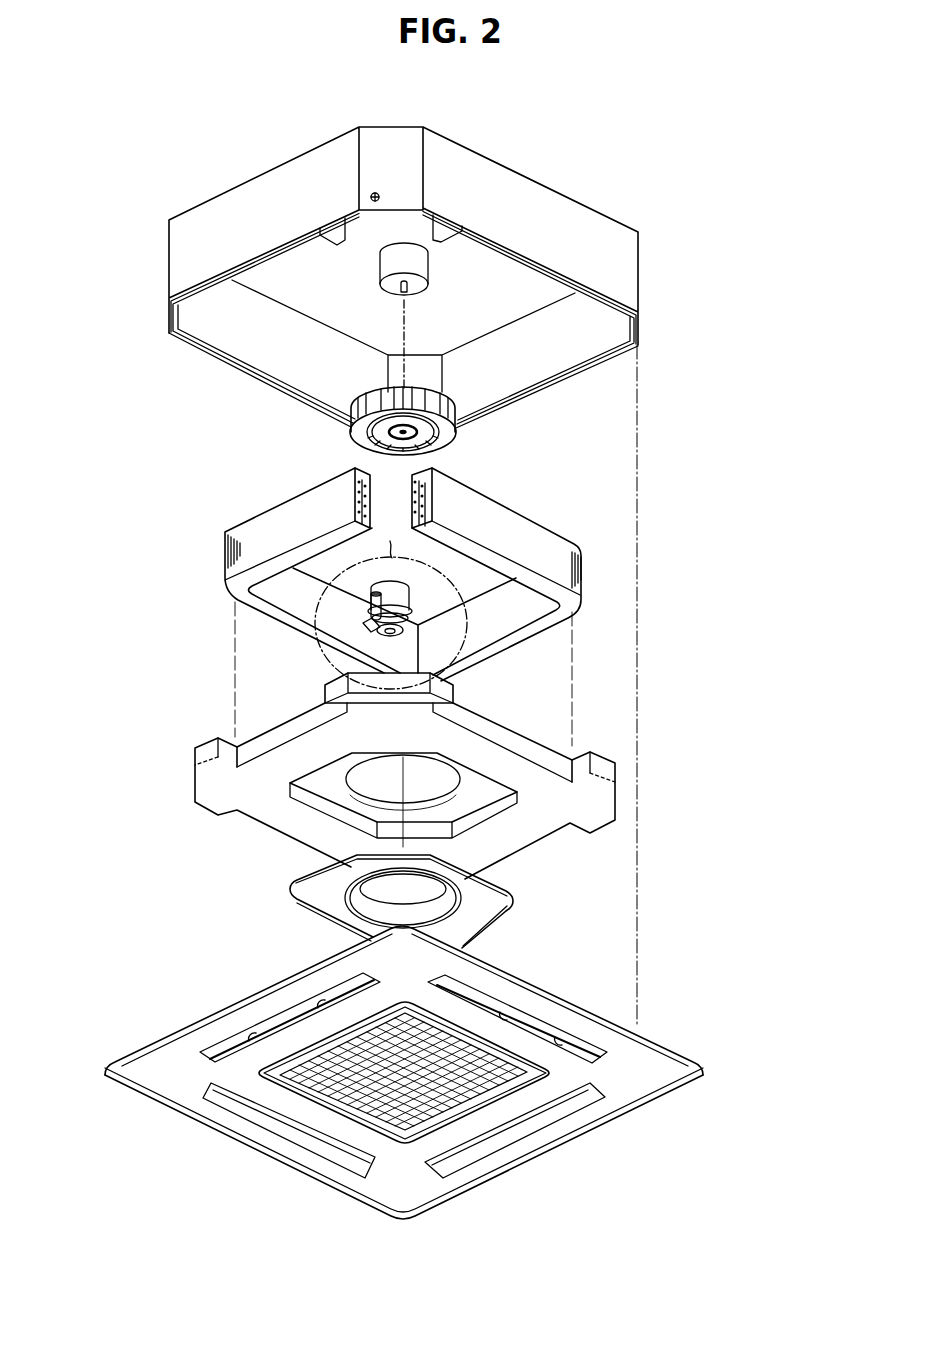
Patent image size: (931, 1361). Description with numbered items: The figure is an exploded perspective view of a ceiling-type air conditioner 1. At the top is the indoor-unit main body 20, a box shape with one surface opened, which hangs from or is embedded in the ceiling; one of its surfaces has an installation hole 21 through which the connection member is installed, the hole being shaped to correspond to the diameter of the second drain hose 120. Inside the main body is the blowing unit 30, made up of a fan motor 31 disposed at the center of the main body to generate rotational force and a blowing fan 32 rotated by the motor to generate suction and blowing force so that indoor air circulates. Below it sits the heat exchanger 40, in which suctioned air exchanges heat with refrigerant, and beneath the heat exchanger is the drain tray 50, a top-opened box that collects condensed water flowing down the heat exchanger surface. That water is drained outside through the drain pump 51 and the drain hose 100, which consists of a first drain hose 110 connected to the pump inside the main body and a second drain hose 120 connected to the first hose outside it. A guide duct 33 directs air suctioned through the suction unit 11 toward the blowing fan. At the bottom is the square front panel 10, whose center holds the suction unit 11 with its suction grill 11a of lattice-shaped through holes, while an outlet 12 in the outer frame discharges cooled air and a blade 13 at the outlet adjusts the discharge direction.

The ceiling-type air conditioner 1 is at (691, 148).
The front panel 10 is at (709, 1032).
The suction unit 11 is at (458, 1127).
The suction grill 11a is at (393, 1088).
The outlet 12 is at (523, 1010).
The blade 13 is at (547, 1120).
The indoor-unit main body 20 is at (516, 191).
The installation hole 21 is at (371, 197).
The blowing unit 30 is at (425, 425).
The fan motor 31 is at (415, 263).
The blowing fan 32 is at (352, 436).
The guide duct 33 is at (503, 906).
The heat exchanger 40 is at (529, 534).
The drain tray 50 is at (590, 802).
The drain pump 51 is at (402, 596).
The drain hose 100 is at (95, 623).
The first drain hose 110 is at (362, 639).
The second drain hose 120 is at (368, 596).